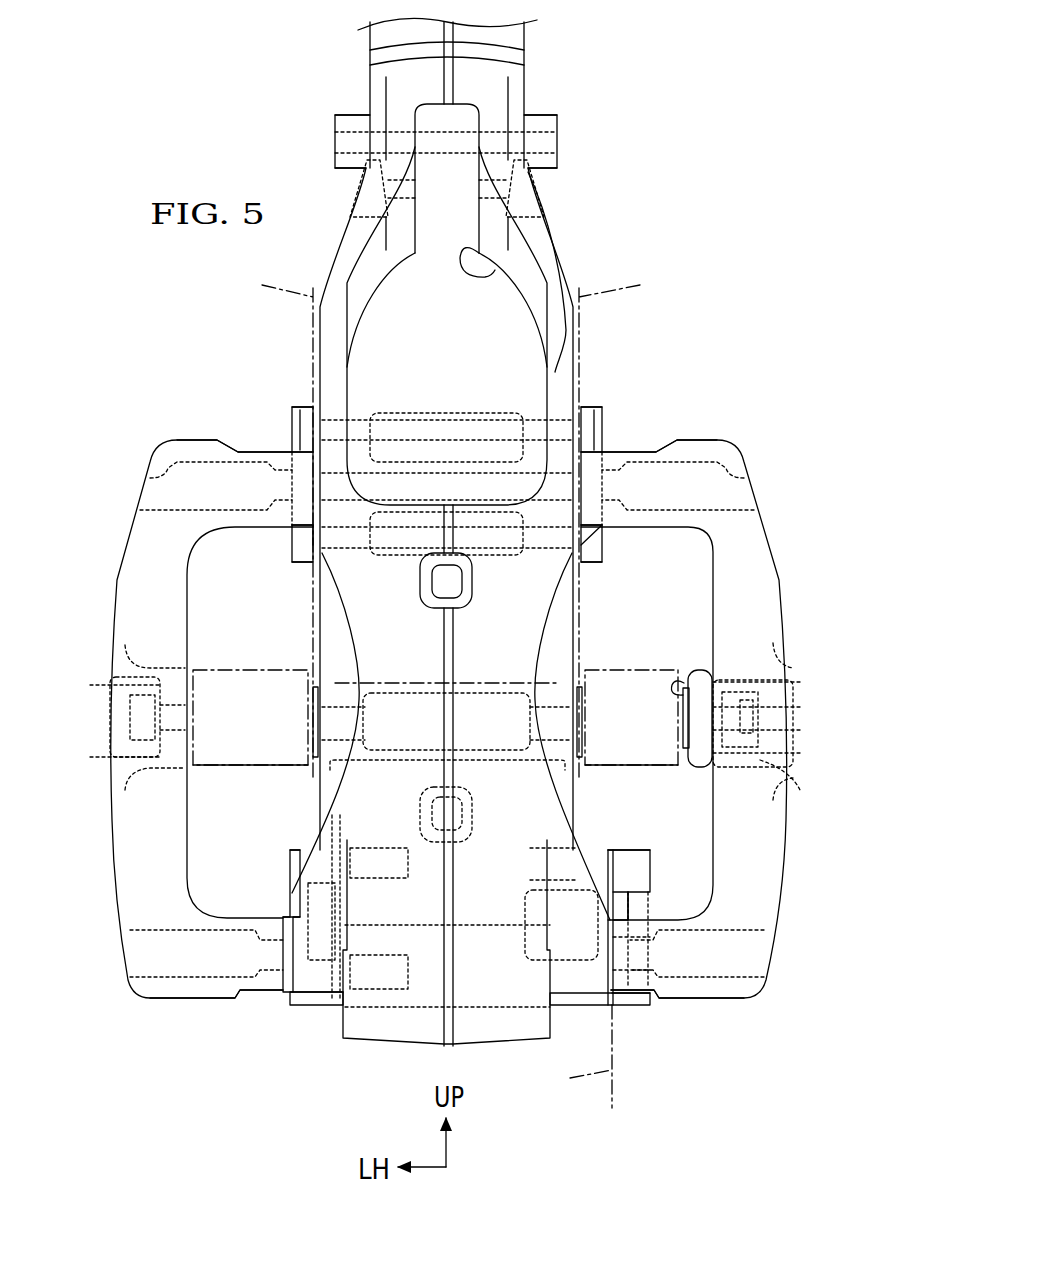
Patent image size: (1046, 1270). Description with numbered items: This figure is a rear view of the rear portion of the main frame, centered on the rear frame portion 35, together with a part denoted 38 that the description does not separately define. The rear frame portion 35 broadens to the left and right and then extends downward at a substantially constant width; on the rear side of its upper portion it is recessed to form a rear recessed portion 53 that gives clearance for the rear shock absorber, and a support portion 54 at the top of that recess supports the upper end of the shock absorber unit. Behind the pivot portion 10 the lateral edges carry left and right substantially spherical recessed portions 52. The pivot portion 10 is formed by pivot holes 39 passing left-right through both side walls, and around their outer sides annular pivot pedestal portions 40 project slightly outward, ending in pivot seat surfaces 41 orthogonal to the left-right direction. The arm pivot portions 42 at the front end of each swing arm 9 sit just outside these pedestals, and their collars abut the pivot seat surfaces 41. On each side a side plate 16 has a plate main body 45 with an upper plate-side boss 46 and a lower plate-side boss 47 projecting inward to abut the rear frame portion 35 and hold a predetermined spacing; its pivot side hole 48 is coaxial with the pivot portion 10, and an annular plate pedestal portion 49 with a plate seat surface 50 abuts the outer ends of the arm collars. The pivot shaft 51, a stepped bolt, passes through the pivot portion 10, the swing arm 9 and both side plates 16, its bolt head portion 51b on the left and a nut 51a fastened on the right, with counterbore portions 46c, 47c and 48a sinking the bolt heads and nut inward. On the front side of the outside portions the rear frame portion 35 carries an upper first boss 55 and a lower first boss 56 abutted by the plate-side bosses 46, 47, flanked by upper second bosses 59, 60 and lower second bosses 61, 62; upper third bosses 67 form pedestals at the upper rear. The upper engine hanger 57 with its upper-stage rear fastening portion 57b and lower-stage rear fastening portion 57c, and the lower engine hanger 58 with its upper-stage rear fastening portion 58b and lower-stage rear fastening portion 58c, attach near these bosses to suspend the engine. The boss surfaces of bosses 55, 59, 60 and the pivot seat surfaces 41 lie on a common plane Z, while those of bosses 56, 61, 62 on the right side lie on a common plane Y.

The swing arm 9 is at (213, 765).
The pivot portion 10 is at (333, 803).
The side plates 16 is at (145, 436).
The rear frame portion 35 is at (583, 222).
The front frame member 38 is at (533, 288).
The pivot holes 39 is at (365, 692).
The pivot pedestal portions 40 is at (310, 727).
The pivot seat surfaces 41 is at (444, 694).
The arm pivot portions 42 is at (435, 792).
The plate main body 45 is at (122, 538).
The upper plate-side boss 46 is at (262, 450).
The counterbore portion 46c is at (150, 478).
The lower plate-side boss 47 is at (258, 995).
The counterbore portion 47c is at (135, 938).
The pivot side hole 48 is at (130, 715).
The counterbore portion 48a is at (112, 690).
The plate pedestal portion 49 is at (185, 662).
The plate seat surface 50 is at (459, 688).
The pivot shaft 51 is at (175, 738).
The nut 51a is at (795, 745).
The bolt head portion 51b is at (115, 745).
The recessed portions 52 is at (330, 622).
The rear recessed portion 53 is at (496, 333).
The support portion 54 is at (488, 280).
The upper first boss 55 is at (309, 530).
The lower first boss 56 is at (283, 918).
The upper engine hanger 57 is at (290, 408).
The upper-stage rear fastening portion 57b is at (302, 425).
The lower-stage rear fastening portion 57c is at (292, 540).
The lower engine hanger 58 is at (288, 850).
The upper-stage rear fastening portion 58b is at (289, 850).
The lower-stage rear fastening portion 58c is at (298, 1005).
The upper second boss 59 is at (305, 408).
The upper second boss 60 is at (309, 565).
The lower second boss 61 is at (618, 845).
The lower second boss 62 is at (330, 1005).
The upper third bosses 67 is at (330, 112).